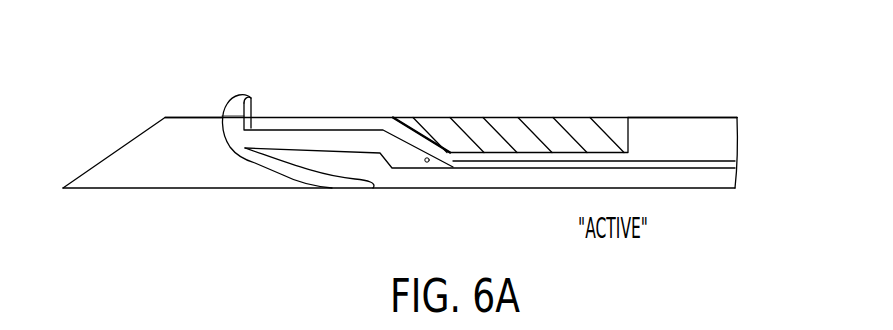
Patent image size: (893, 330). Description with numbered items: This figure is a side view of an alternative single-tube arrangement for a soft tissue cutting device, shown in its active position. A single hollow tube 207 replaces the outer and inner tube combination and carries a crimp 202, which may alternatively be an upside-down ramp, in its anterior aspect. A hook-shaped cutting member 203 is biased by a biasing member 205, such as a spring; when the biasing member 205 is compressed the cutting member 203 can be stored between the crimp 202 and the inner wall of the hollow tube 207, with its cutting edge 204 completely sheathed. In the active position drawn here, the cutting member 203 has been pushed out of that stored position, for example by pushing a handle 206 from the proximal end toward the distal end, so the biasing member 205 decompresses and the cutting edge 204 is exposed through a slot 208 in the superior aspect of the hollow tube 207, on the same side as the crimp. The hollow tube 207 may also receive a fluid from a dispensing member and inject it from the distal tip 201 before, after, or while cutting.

The distal tip 201 is at (63, 188).
The crimp 202 is at (537, 127).
The cutting member 203 is at (232, 103).
The cutting edge 204 is at (252, 105).
The biasing member 205 is at (307, 178).
The handle 206 is at (698, 160).
The hollow tube 207 is at (673, 122).
The slot 208 is at (193, 97).